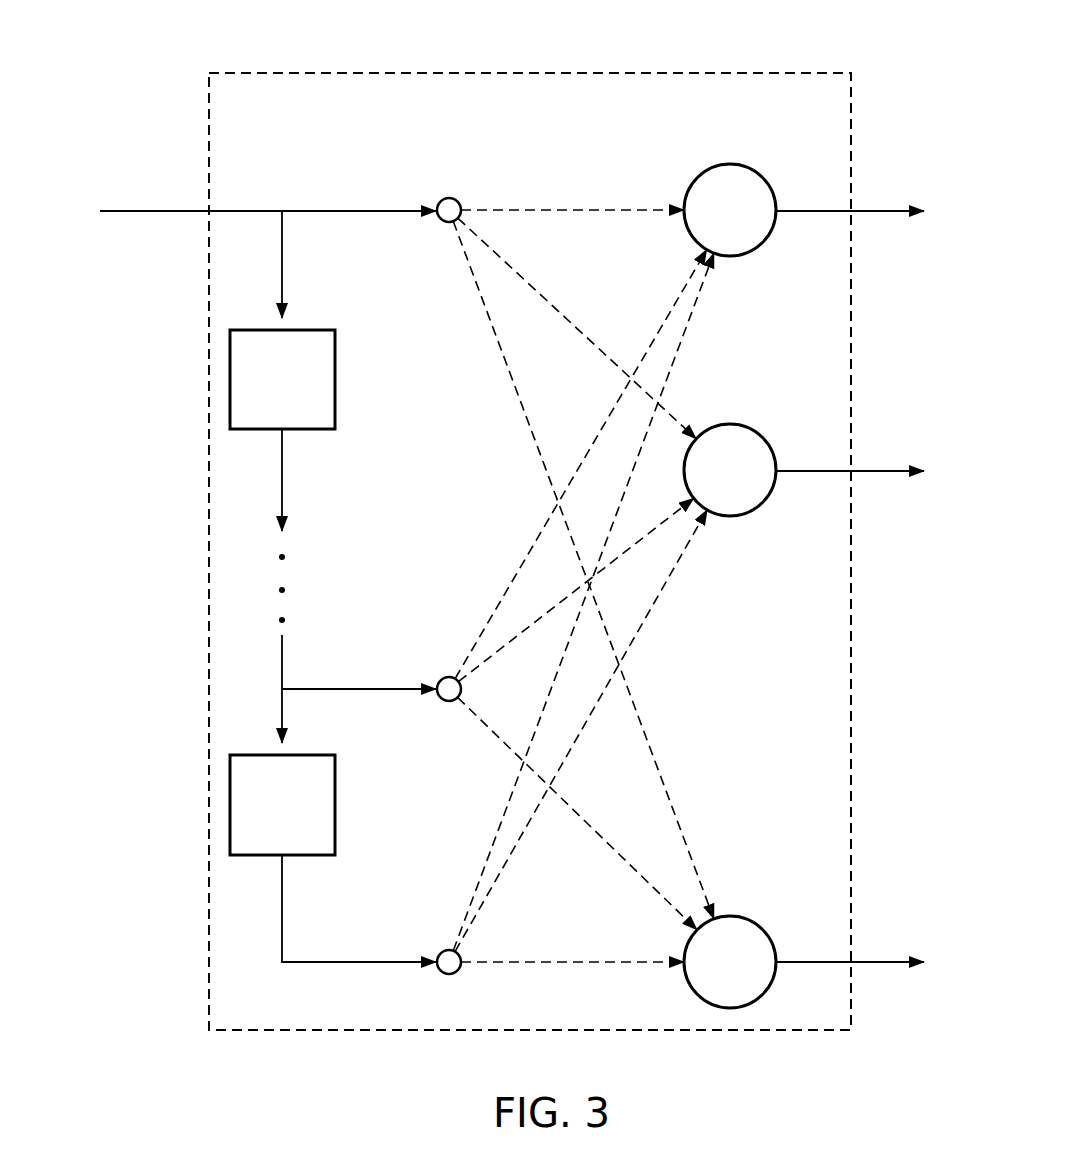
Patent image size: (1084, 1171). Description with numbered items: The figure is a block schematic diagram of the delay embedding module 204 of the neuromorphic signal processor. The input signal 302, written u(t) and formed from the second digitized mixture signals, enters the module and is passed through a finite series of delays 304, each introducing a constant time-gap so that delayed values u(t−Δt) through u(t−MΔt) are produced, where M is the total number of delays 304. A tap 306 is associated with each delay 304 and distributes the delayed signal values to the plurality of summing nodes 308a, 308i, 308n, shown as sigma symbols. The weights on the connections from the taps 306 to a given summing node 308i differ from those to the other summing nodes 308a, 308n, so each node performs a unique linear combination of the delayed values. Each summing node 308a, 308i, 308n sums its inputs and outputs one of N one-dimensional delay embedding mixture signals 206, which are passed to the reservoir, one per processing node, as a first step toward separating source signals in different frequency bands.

The input signal 302 is at (88, 100).
The delay embedding module 204 is at (420, 73).
The delay 304 is at (336, 384).
The tap 306 is at (452, 197).
The summing node 308a is at (728, 164).
The summing node 308i is at (772, 443).
The summing node 308n is at (770, 933).
The delay embedding mixture signals 206 is at (886, 995).